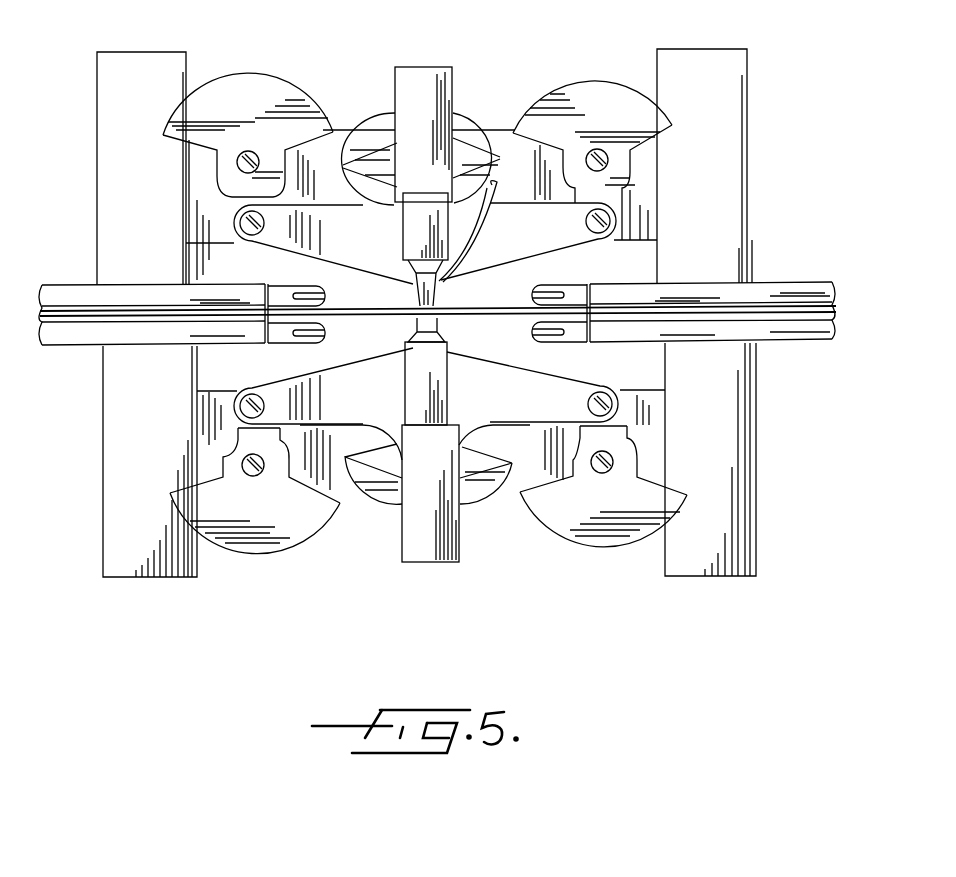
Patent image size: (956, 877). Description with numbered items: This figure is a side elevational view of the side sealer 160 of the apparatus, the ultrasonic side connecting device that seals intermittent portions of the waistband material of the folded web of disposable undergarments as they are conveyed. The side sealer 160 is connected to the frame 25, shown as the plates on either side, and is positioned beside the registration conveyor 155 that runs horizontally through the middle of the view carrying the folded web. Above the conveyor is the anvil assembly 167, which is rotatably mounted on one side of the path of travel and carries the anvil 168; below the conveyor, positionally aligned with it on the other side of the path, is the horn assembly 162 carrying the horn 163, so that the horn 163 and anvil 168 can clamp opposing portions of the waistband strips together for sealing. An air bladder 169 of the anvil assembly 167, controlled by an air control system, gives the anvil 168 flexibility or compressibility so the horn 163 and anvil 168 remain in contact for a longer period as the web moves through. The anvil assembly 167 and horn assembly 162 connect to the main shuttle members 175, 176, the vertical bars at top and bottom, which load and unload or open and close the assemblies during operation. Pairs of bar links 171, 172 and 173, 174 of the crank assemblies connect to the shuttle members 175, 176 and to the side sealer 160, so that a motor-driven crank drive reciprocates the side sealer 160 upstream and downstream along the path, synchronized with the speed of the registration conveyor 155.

The frame 25 is at (122, 62).
The registration conveyor 155 is at (840, 311).
The side sealer 160 is at (783, 43).
The horn assembly 162 is at (370, 374).
The horn 163 is at (440, 325).
The anvil assembly 167 is at (370, 253).
The anvil 168 is at (443, 294).
The air bladder 169 is at (447, 280).
The bar link 171 is at (273, 95).
The bar link 172 is at (598, 80).
The bar link 173 is at (305, 528).
The bar link 174 is at (597, 540).
The main shuttle member 175 is at (445, 92).
The main shuttle member 176 is at (428, 552).